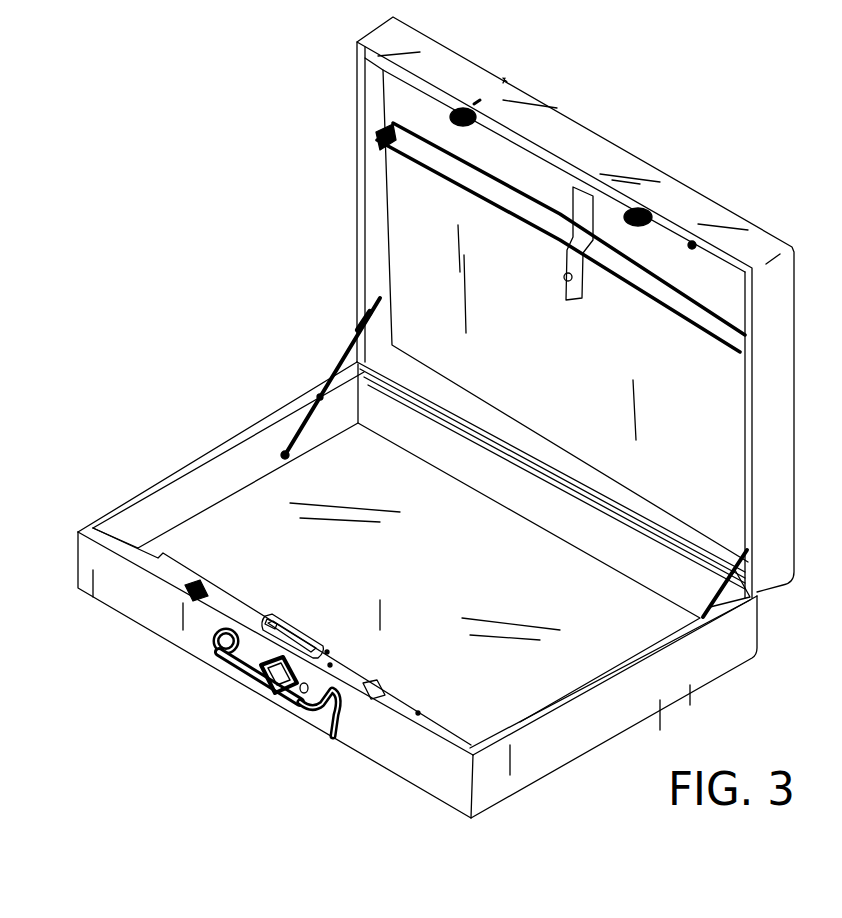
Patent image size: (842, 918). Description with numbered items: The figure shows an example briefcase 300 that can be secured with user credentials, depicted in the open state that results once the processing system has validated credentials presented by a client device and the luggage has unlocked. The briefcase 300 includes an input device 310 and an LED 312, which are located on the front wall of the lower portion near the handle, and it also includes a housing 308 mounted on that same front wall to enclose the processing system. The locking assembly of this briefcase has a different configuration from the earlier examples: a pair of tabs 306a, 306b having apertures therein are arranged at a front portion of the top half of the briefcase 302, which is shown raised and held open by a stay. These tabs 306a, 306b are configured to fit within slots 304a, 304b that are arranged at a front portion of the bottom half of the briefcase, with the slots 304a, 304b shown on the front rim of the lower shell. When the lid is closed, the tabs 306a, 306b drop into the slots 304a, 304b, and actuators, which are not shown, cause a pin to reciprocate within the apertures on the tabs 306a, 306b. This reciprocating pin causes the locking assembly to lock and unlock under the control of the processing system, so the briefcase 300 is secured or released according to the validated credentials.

The briefcase 300 is at (229, 95).
The top half of the briefcase 302 is at (185, 466).
The slot 304a is at (200, 590).
The slot 304b is at (372, 686).
The tab 306a is at (466, 128).
The tab 306b is at (645, 228).
The housing 308 is at (300, 637).
The input device 310 is at (280, 694).
The LED 312 is at (303, 695).